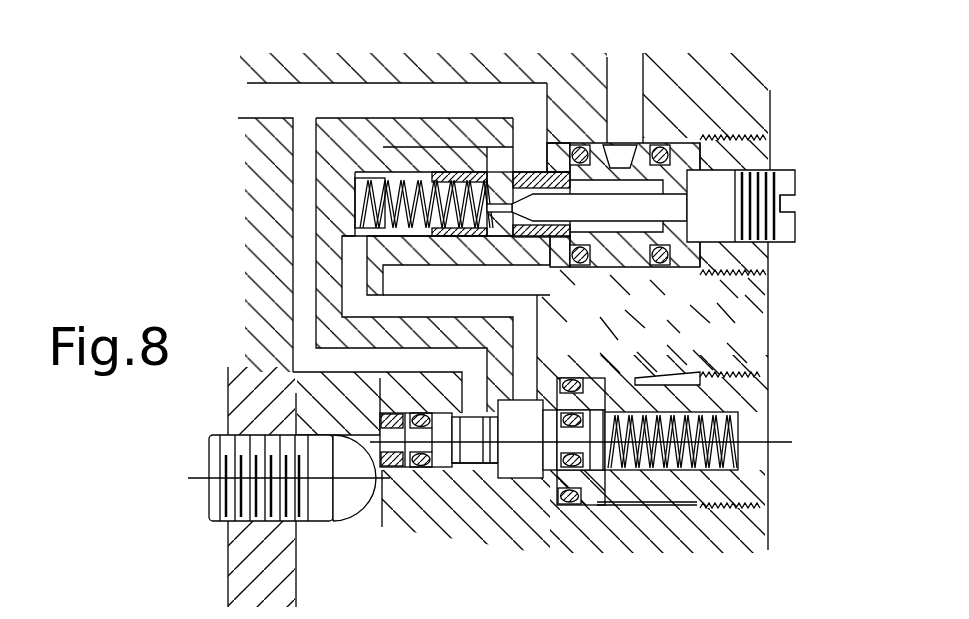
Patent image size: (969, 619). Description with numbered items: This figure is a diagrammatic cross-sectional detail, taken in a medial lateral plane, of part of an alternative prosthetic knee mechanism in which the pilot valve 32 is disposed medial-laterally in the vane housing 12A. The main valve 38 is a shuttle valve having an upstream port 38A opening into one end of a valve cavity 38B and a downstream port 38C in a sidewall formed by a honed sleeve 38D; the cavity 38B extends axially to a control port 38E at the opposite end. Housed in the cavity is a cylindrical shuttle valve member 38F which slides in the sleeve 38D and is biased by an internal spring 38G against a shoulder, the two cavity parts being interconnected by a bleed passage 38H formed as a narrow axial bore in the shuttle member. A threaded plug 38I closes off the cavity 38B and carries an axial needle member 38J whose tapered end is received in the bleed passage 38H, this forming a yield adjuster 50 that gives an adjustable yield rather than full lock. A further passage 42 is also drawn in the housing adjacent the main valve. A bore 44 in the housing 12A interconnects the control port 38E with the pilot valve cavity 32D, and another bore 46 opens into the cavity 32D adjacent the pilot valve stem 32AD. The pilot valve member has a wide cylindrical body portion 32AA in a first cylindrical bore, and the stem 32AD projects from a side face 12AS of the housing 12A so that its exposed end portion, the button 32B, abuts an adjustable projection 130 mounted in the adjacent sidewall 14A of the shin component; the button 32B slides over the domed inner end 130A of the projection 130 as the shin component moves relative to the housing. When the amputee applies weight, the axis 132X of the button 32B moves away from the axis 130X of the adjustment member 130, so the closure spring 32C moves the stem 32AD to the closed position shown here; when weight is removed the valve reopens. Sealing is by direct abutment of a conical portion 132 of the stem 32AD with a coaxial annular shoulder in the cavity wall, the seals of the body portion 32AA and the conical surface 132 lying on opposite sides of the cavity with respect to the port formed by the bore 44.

The vane housing 12A is at (760, 362).
The side face of the housing 12AS is at (370, 525).
The sidewall of the shin component 14A is at (240, 560).
The pilot valve 32 is at (576, 481).
The wide cylindrical body portion 32AA is at (590, 517).
The pilot valve stem 32AD is at (478, 468).
The pilot valve button 32B is at (368, 438).
The closure spring 32C is at (738, 430).
The pilot valve cavity 32D is at (552, 385).
The main valve 38 is at (531, 187).
The upstream port 38A is at (650, 130).
The valve cavity 38B is at (620, 252).
The downstream port 38C is at (540, 150).
The honed sleeve 38D is at (483, 248).
The control port 38E is at (345, 233).
The shuttle valve member 38F is at (428, 252).
The internal spring 38G is at (353, 205).
The bleed passage 38H is at (500, 150).
The threaded plug 38I is at (792, 170).
The needle member 38J is at (675, 262).
The inlet passage 42 is at (546, 82).
The bore 44 is at (543, 340).
The bore 46 is at (297, 302).
The yield adjuster 50 is at (810, 207).
The adjustable projection 130 is at (265, 492).
The domed inner end 130A is at (347, 507).
The axis of the adjustment member 130X is at (202, 470).
The conical portion 132 is at (478, 465).
The axis of the pilot valve button 132X is at (783, 443).